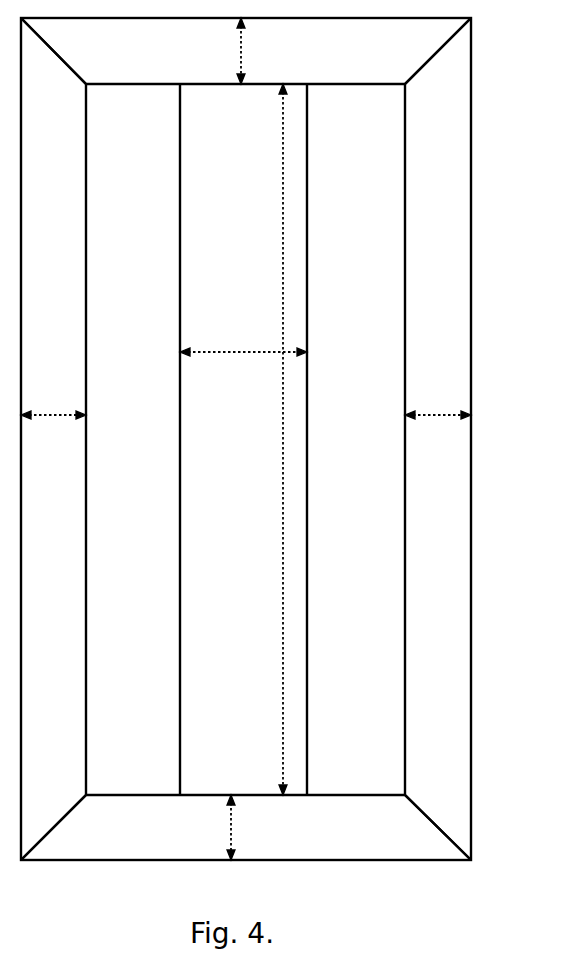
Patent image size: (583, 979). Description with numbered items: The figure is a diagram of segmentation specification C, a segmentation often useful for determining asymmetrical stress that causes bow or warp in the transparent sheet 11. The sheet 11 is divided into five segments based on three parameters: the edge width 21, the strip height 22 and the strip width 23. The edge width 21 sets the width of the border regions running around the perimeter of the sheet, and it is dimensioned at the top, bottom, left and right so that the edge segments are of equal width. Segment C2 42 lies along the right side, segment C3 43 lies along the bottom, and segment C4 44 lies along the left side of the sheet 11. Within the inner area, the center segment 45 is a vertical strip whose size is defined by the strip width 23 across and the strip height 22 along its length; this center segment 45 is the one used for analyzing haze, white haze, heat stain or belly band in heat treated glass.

The transparent sheet 11 is at (487, 262).
The edge width 21 is at (246, 439).
The strip height 22 is at (243, 439).
The strip width 23 is at (243, 329).
The segment C2 42 is at (438, 439).
The segment C3 43 is at (246, 827).
The segment C4 44 is at (53, 439).
The center segment 45 is at (242, 439).